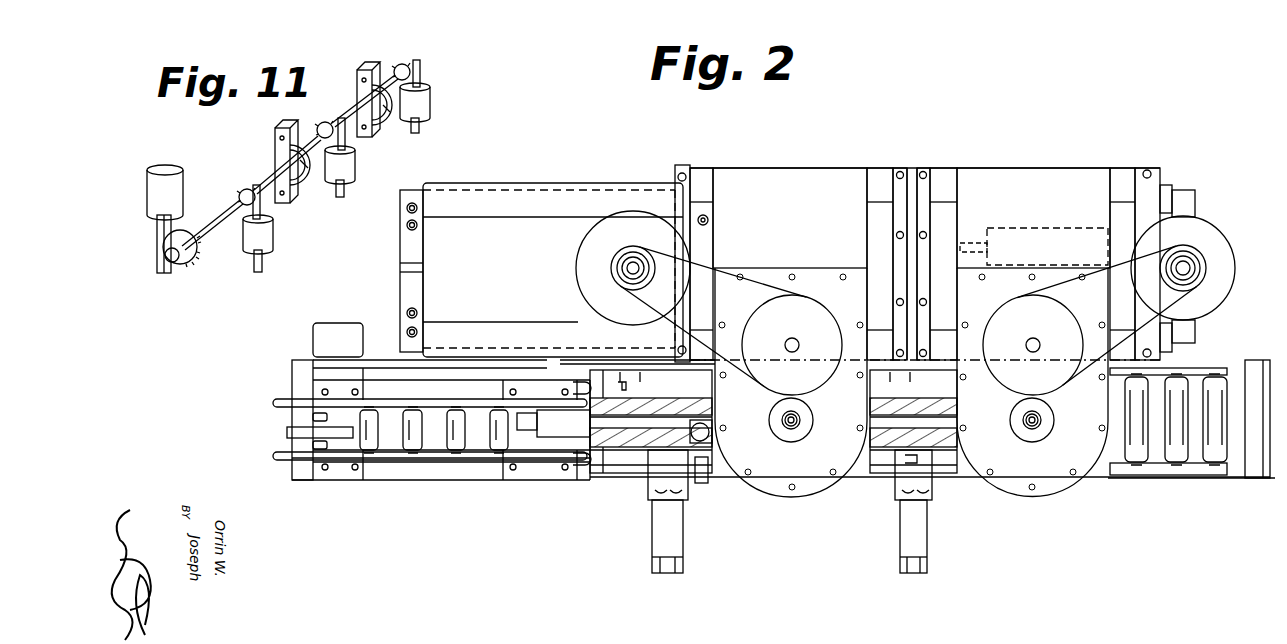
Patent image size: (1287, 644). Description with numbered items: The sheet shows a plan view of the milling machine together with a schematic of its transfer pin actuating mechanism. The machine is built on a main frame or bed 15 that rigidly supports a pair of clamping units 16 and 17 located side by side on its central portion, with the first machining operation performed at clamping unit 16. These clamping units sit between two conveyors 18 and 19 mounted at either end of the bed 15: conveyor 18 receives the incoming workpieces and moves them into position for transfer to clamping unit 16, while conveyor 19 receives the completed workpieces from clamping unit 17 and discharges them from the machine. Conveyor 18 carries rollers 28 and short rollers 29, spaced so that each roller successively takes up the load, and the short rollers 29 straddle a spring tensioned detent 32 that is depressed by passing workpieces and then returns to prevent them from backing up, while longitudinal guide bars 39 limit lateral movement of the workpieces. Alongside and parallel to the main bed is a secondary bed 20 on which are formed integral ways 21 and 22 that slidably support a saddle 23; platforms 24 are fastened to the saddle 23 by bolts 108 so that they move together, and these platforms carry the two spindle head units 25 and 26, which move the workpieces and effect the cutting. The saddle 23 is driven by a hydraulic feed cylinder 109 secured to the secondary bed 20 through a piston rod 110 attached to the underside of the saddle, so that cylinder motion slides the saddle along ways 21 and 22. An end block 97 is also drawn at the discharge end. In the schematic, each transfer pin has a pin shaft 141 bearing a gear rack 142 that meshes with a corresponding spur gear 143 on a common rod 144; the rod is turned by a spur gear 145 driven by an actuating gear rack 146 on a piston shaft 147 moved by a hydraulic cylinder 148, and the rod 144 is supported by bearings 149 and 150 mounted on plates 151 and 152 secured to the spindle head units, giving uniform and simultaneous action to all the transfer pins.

In FIG. 2, the main frame or bed 15 is at (1257, 480).
In FIG. 2, the clamping unit 16 is at (615, 477).
In FIG. 2, the clamping unit 17 is at (868, 473).
In FIG. 2, the conveyor 18 is at (385, 462).
In FIG. 2, the conveyor 19 is at (1193, 470).
In FIG. 2, the secondary bed 20 is at (493, 236).
In FIG. 2, the way 21 is at (457, 203).
In FIG. 2, the way 22 is at (452, 333).
In FIG. 2, the saddle 23 is at (910, 208).
In FIG. 2, the platforms 24 is at (795, 168).
In FIG. 2, the spindle head unit 25 is at (766, 472).
In FIG. 2, the spindle head unit 26 is at (1009, 493).
In FIG. 2, the rollers 28 is at (420, 427).
In FIG. 2, the short rollers 29 is at (286, 406).
In FIG. 2, the detent 32 is at (287, 432).
In FIG. 2, the guide bars 39 is at (410, 461).
In FIG. 2, the end block 97 is at (1240, 366).
In FIG. 2, the bolts 108 is at (923, 172).
In FIG. 2, the hydraulic feed cylinder 109 is at (1037, 228).
In FIG. 2, the piston rod 110 is at (967, 243).
In FIG. 11, the pin shaft 141 is at (258, 270).
In FIG. 11, the gear rack 142 is at (241, 232).
In FIG. 11, the spur gears 143 is at (239, 194).
In FIG. 11, the rod 144 is at (207, 223).
In FIG. 11, the spur gear 145 is at (192, 262).
In FIG. 11, the actuating gear rack 146 is at (165, 252).
In FIG. 11, the piston shaft 147 is at (159, 224).
In FIG. 11, the hydraulic cylinder 148 is at (162, 166).
In FIG. 11, the bearing 149 is at (298, 185).
In FIG. 11, the bearing 150 is at (391, 113).
In FIG. 11, the plate 151 is at (276, 148).
In FIG. 11, the plate 152 is at (356, 78).